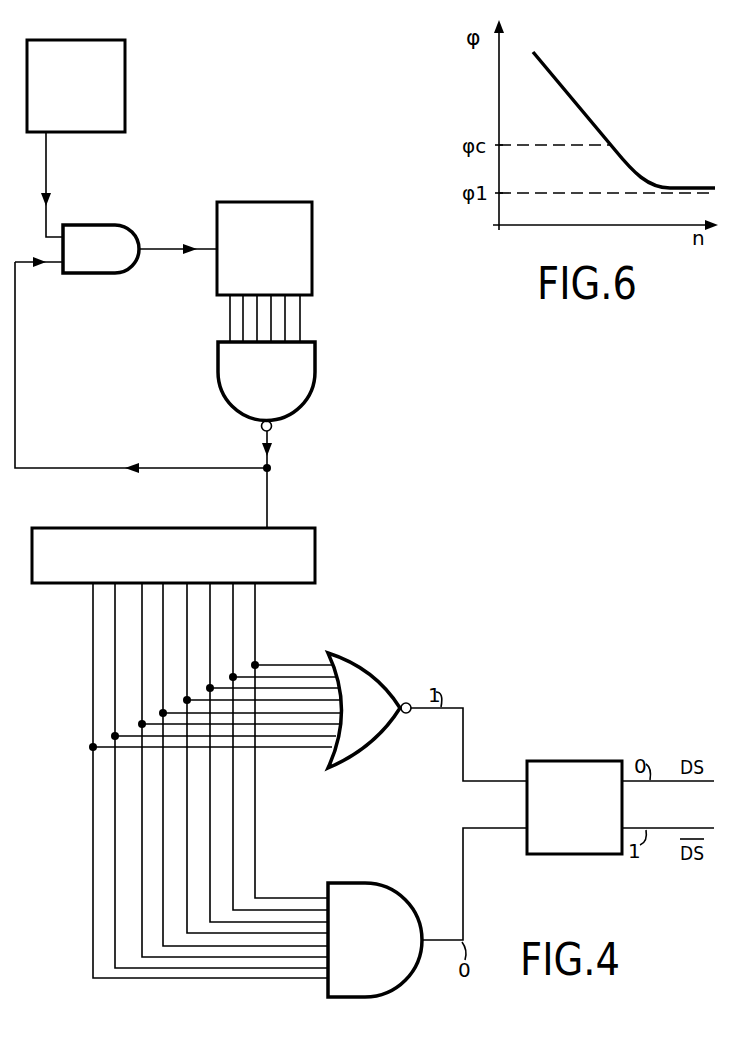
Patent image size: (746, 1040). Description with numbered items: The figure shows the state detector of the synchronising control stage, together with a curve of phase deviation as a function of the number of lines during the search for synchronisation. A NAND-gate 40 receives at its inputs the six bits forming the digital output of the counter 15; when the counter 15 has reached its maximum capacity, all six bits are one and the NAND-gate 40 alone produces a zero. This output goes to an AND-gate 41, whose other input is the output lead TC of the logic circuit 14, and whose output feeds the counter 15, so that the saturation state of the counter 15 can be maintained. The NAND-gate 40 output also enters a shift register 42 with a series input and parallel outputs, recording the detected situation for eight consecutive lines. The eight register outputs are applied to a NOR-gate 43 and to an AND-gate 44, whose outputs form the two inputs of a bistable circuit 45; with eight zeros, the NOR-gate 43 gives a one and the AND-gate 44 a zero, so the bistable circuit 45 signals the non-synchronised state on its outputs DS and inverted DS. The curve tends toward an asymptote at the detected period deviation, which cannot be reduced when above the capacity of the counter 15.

The logic circuit 14 is at (111, 80).
The AND-gate 41 is at (123, 238).
The counter 15 is at (297, 226).
The NAND-gate 40 is at (300, 367).
The shift register 42 is at (302, 552).
The NOR-gate 43 is at (362, 688).
The AND-gate 44 is at (398, 958).
The bistable circuit 45 is at (555, 770).